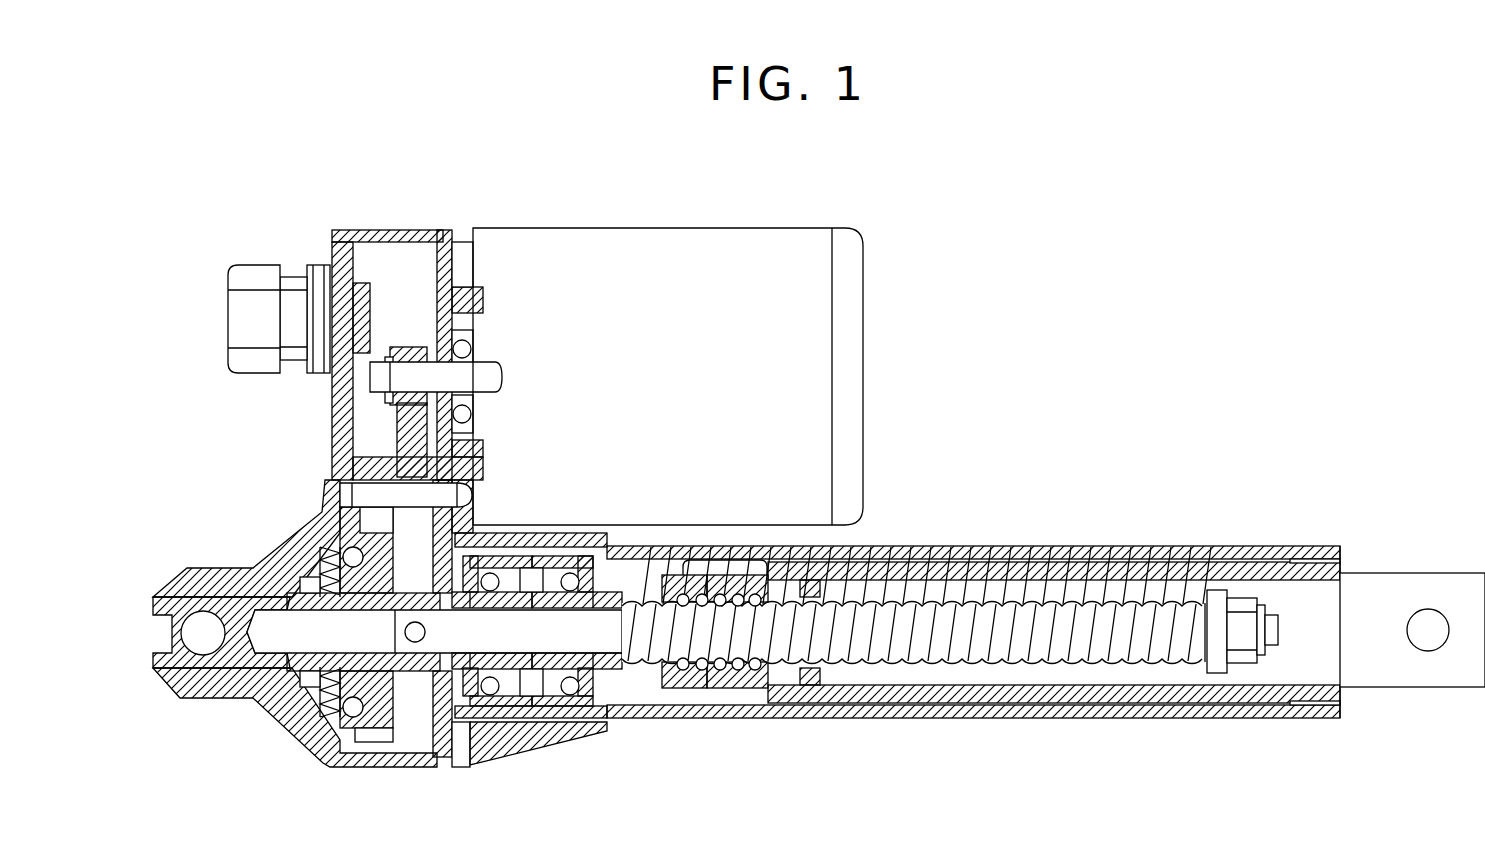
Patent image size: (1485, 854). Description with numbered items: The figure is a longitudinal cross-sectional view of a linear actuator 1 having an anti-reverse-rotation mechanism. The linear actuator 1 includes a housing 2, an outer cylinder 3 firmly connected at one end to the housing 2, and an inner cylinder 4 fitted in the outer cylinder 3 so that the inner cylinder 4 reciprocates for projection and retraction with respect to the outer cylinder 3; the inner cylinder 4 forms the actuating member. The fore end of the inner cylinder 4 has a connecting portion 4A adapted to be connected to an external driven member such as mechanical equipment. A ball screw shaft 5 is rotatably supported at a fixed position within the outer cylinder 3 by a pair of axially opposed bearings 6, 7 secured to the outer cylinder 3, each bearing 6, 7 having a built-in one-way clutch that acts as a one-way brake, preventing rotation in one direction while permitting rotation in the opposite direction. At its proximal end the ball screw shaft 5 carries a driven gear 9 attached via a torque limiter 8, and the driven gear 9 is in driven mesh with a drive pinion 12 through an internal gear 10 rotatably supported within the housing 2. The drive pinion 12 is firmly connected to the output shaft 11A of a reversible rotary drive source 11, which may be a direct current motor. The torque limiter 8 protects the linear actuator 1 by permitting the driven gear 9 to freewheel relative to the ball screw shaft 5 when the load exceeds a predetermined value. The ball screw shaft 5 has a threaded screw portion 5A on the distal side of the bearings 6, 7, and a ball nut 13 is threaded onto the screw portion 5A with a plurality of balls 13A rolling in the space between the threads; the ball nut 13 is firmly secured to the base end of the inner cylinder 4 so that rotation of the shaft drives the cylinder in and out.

The linear actuator 1 is at (898, 318).
The housing 2 is at (300, 518).
The outer cylinder 3 is at (1025, 712).
The inner cylinder 4 is at (1220, 680).
The connecting portion 4A is at (1418, 675).
The ball screw shaft 5 is at (616, 640).
The threaded screw portion 5A is at (988, 580).
The bearing 6 is at (562, 698).
The bearing 7 is at (494, 698).
The torque limiter 8 is at (349, 738).
The driven gear 9 is at (380, 742).
The internal gear 10 is at (408, 432).
The rotary drive source 11 is at (690, 247).
The output shaft 11A is at (490, 370).
The drive pinion 12 is at (408, 346).
The ball nut 13 is at (750, 690).
The balls 13A is at (748, 574).